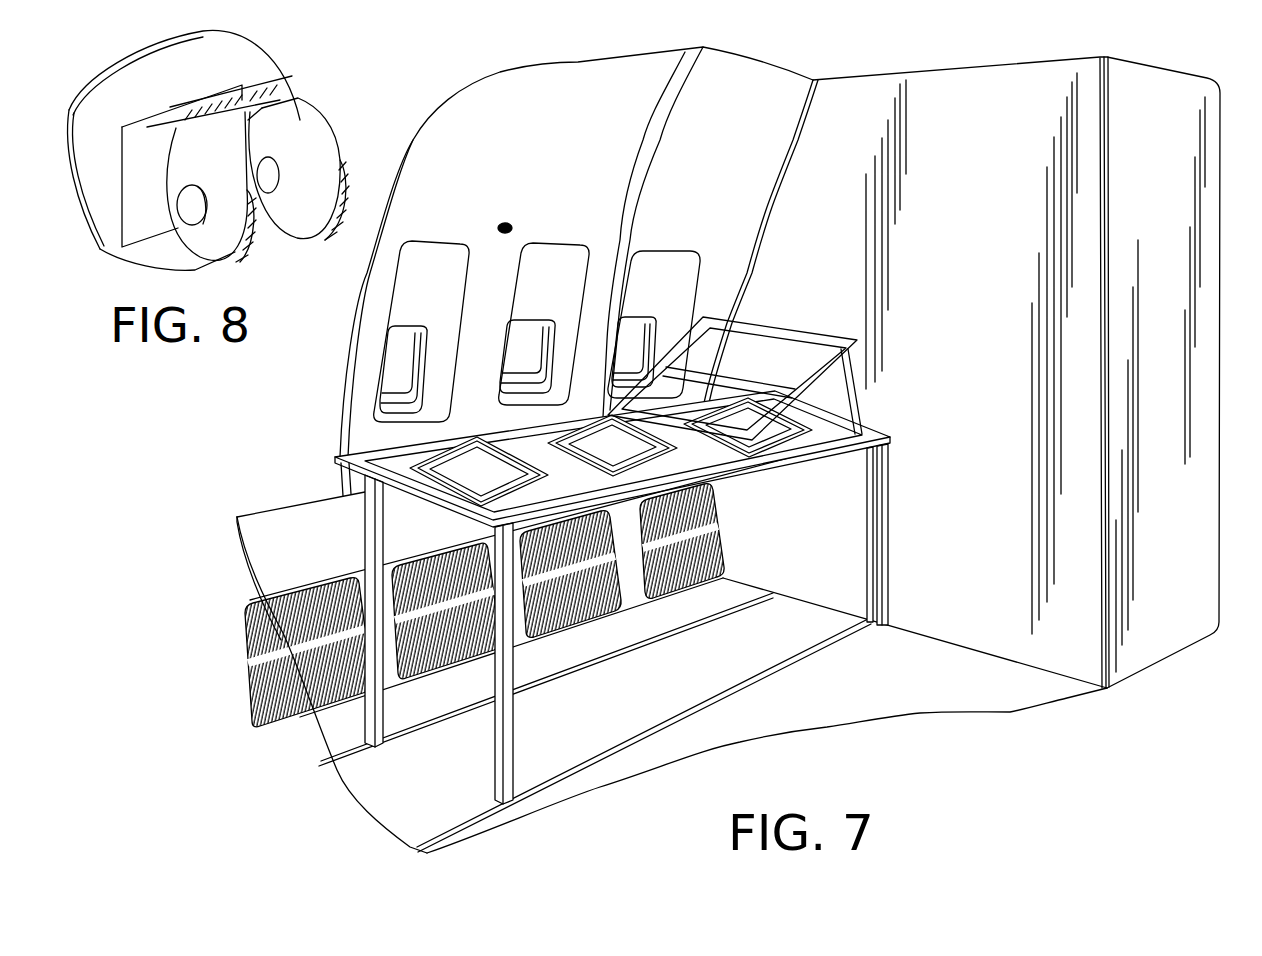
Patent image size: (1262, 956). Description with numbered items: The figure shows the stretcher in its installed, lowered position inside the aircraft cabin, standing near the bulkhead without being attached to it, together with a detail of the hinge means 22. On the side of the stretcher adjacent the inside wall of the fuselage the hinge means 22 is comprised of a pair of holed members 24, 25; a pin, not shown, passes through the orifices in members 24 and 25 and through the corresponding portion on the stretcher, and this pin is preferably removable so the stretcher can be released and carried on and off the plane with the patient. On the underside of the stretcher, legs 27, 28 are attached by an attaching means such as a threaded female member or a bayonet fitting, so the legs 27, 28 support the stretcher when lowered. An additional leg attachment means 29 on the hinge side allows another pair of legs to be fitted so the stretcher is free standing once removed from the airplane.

In FIG. 8, the hinge means 22 is at (307, 130).
In FIG. 8, the holed member 24 is at (228, 240).
In FIG. 8, the holed member 25 is at (297, 225).
In FIG. 7, the leg 27 is at (515, 792).
In FIG. 7, the leg 28 is at (889, 564).
In FIG. 7, the additional leg attachment means 29 is at (512, 226).